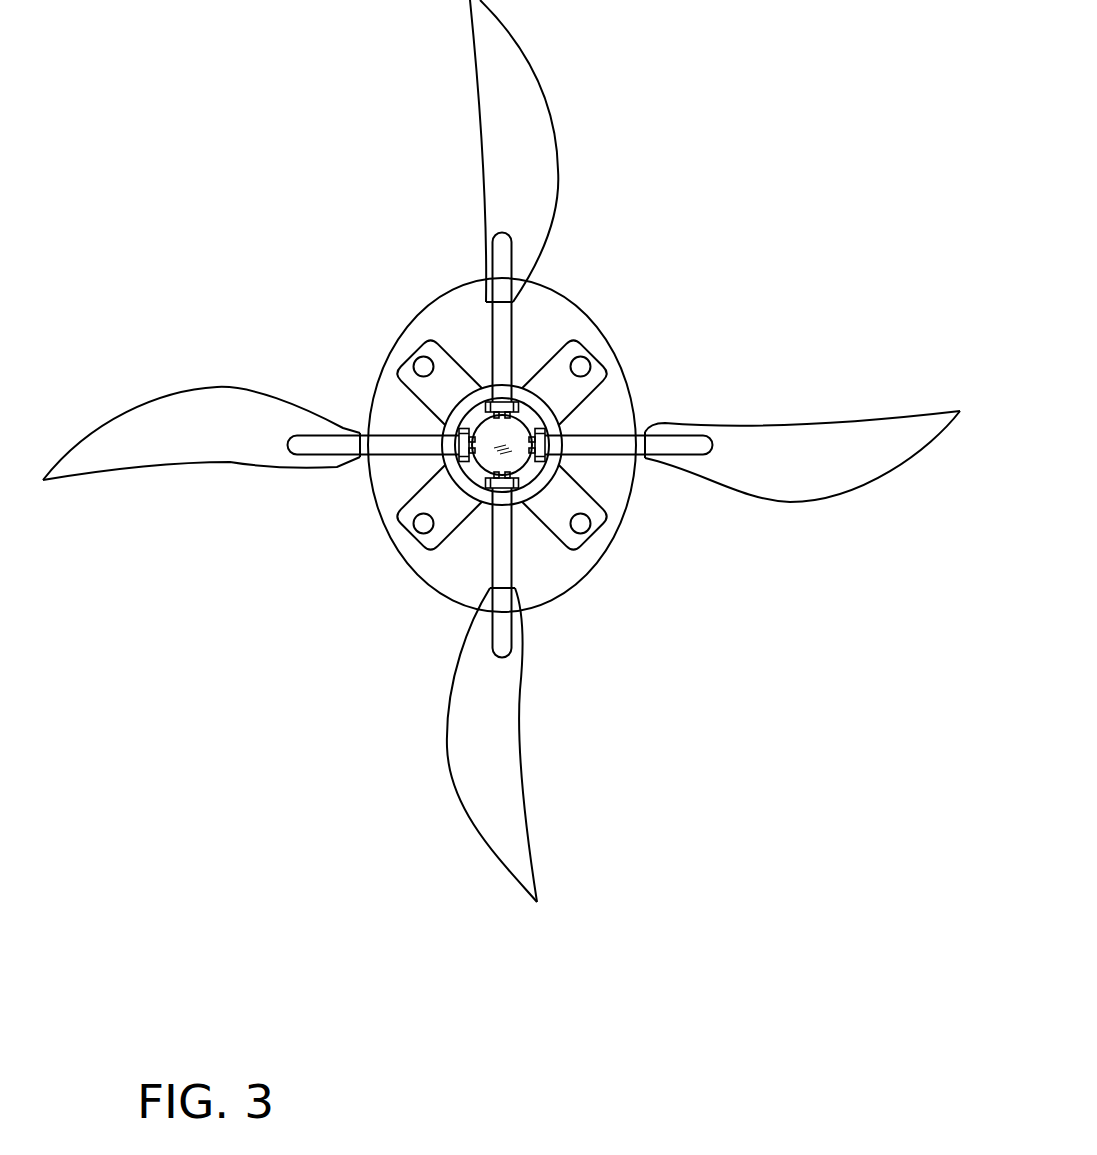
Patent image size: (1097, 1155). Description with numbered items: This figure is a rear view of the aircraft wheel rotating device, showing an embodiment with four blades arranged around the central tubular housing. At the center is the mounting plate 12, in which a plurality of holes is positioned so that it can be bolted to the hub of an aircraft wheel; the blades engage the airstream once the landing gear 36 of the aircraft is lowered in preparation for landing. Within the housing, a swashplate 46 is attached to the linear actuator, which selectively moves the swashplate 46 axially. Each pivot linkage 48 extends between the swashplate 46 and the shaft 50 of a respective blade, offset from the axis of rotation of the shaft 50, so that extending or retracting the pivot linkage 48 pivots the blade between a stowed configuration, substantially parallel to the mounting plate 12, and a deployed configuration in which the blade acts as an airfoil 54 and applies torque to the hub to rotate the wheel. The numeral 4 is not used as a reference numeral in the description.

The propeller assembly 4 is at (595, 320).
The mounting plate 12 is at (562, 498).
The landing gear 36 is at (778, 467).
The swashplate 46 is at (523, 428).
The pivot linkage 48 is at (523, 470).
The shaft 50 is at (397, 447).
The airfoil 54 is at (540, 52).